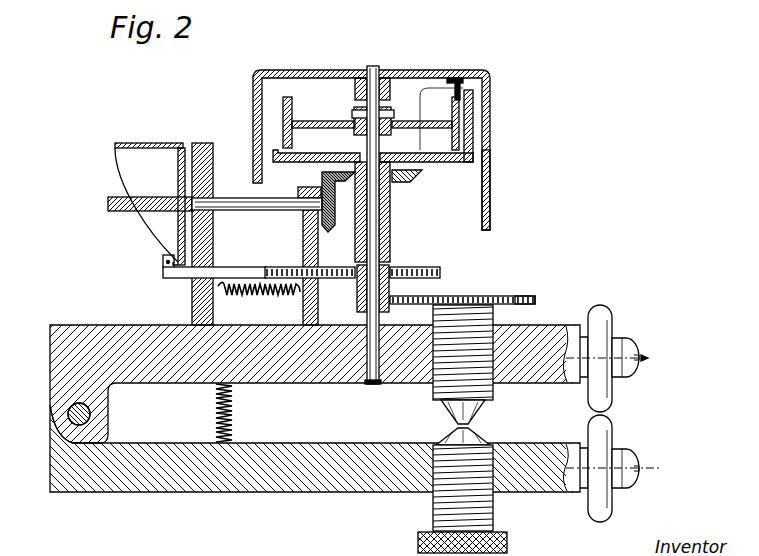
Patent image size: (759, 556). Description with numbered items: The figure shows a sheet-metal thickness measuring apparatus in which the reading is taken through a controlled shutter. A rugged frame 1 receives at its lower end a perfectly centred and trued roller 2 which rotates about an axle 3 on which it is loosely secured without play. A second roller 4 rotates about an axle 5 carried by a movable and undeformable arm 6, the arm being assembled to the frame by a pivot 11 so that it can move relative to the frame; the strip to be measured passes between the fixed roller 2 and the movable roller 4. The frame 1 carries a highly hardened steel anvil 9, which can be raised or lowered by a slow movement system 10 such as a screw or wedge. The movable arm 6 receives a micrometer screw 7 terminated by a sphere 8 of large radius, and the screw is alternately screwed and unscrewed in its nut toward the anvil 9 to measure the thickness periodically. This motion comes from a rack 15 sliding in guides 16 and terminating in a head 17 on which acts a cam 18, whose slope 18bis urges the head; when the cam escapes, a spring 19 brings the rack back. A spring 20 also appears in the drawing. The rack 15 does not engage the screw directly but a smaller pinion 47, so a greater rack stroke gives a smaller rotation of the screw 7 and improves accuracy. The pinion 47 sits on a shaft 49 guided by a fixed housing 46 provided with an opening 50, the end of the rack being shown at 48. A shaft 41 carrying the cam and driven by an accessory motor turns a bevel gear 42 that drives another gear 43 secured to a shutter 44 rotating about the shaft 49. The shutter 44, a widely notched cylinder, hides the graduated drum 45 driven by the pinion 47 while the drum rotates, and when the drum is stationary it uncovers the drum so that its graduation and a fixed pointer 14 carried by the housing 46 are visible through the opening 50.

The frame 1 is at (237, 486).
The roller 2 is at (597, 500).
The axle 3 is at (641, 468).
The second roller 4 is at (596, 395).
The axle 5 is at (646, 361).
The movable arm 6 is at (299, 372).
The micrometer screw 7 is at (433, 395).
The sphere 8 is at (477, 422).
The anvil 9 is at (453, 431).
The slow movement system 10 is at (495, 520).
The pivot 11 is at (83, 432).
The fixed pointer 14 is at (490, 70).
The rack 15 is at (440, 267).
The guides 16 is at (207, 256).
The head 17 is at (163, 265).
The cam 18 is at (148, 143).
The slope of the cam 18bis is at (120, 167).
The spring 19 is at (257, 293).
The vertical spring 20 is at (212, 415).
The shaft 41 is at (279, 211).
The bevel gear 42 is at (326, 230).
The gear 43 is at (411, 183).
The shutter 44 is at (442, 162).
The graduated drum 45 is at (398, 122).
The fixed housing 46 is at (492, 208).
The pinion 47 is at (390, 293).
The end of lower rack 48 is at (523, 297).
The shaft 49 is at (373, 67).
The opening 50 is at (490, 128).